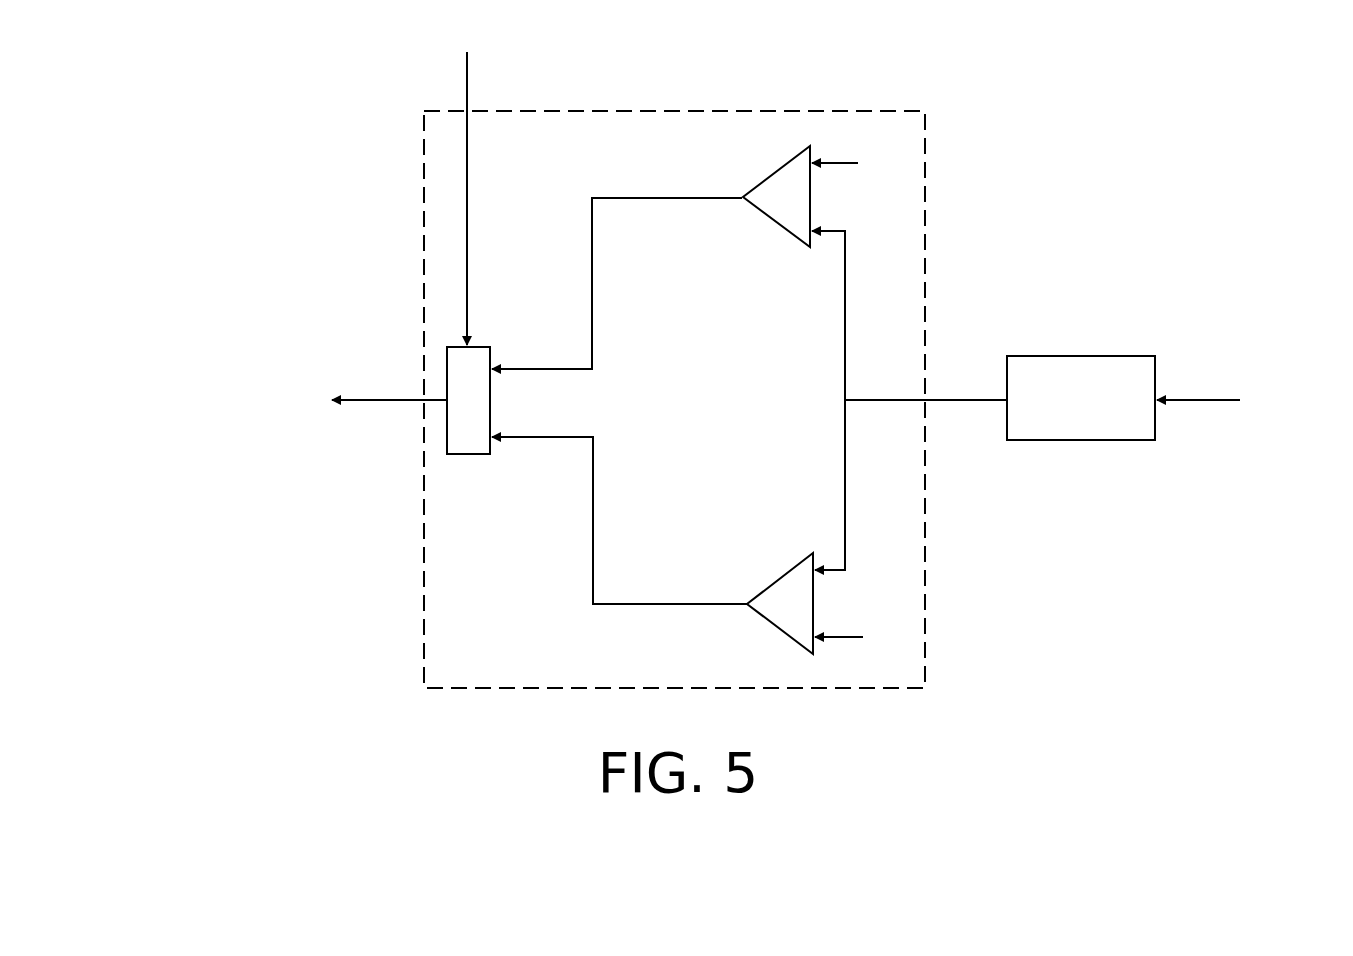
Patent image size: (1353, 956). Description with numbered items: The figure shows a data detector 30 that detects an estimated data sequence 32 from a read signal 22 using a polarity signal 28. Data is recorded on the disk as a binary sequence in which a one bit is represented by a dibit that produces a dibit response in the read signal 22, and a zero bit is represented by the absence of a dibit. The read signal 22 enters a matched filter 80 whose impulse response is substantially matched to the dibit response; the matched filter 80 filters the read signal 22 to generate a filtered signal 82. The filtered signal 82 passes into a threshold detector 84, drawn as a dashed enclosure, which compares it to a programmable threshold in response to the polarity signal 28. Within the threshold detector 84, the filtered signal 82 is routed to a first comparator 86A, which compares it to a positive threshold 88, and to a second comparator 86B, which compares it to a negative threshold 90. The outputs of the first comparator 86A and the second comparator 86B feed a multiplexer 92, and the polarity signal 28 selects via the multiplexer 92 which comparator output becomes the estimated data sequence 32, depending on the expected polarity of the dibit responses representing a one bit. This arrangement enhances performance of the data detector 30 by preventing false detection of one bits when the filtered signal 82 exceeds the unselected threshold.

The data detector 30 is at (200, 137).
The threshold detector 84 is at (748, 111).
The polarity signal 28 is at (466, 86).
The multiplexer 92 is at (470, 457).
The estimated data sequence 32 is at (384, 403).
The first comparator 86A is at (766, 220).
The second comparator 86B is at (774, 580).
The positive threshold 88 is at (845, 165).
The negative threshold 90 is at (848, 634).
The filtered signal 82 is at (969, 397).
The matched filter 80 is at (1078, 355).
The read signal 22 is at (1206, 396).